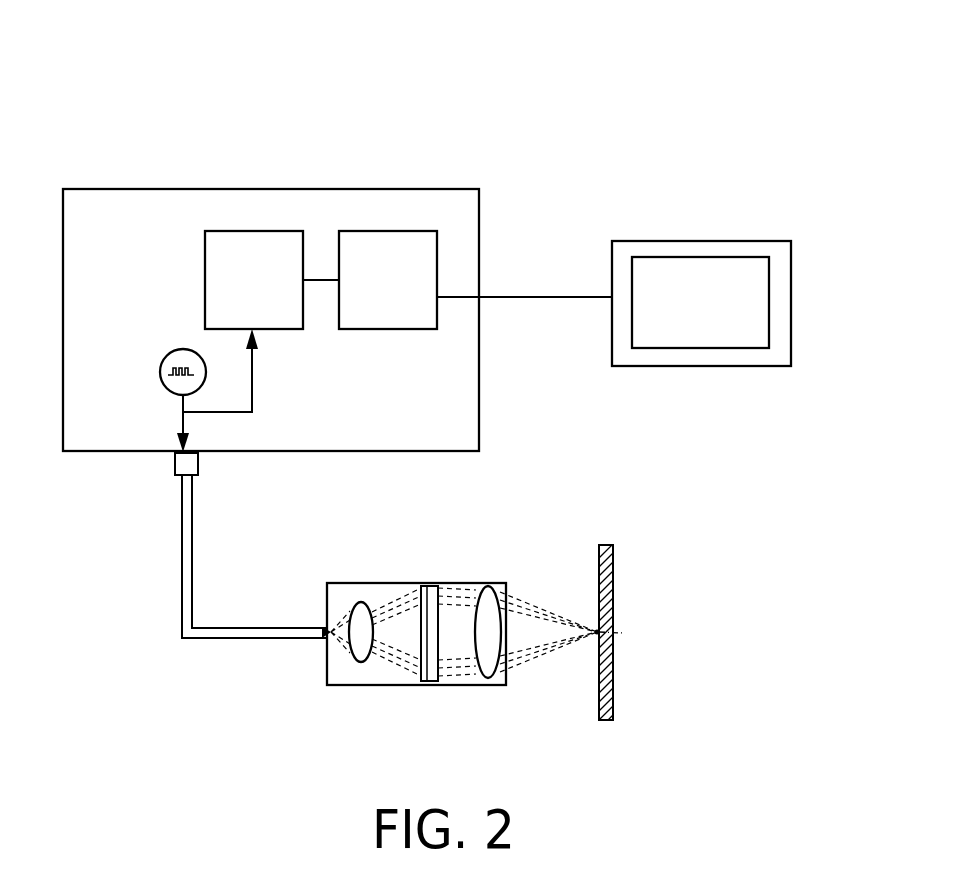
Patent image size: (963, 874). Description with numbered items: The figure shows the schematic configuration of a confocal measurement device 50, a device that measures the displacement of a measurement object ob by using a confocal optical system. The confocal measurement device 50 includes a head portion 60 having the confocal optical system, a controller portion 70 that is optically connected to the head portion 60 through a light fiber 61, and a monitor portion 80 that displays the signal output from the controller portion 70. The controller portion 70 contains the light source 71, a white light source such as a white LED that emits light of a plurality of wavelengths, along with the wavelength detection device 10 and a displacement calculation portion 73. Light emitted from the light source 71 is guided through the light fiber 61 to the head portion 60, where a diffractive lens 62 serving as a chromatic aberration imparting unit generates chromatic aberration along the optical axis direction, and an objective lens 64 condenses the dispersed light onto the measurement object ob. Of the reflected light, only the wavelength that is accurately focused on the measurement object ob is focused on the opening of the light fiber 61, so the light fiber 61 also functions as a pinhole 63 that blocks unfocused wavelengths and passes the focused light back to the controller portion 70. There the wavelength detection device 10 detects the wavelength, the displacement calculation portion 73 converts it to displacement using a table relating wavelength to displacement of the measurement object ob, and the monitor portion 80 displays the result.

The confocal measurement device 50 is at (108, 120).
The controller portion 70 is at (318, 188).
The wavelength detection device 10 is at (205, 266).
The displacement calculation portion 73 is at (387, 330).
The light source 71 is at (168, 352).
The monitor portion 80 is at (791, 298).
The light fiber 61 is at (243, 627).
The head portion 60 is at (400, 583).
The pinhole 63 is at (352, 660).
The diffractive lens 62 is at (431, 686).
The objective lens 64 is at (491, 686).
The measurement object ob is at (605, 545).